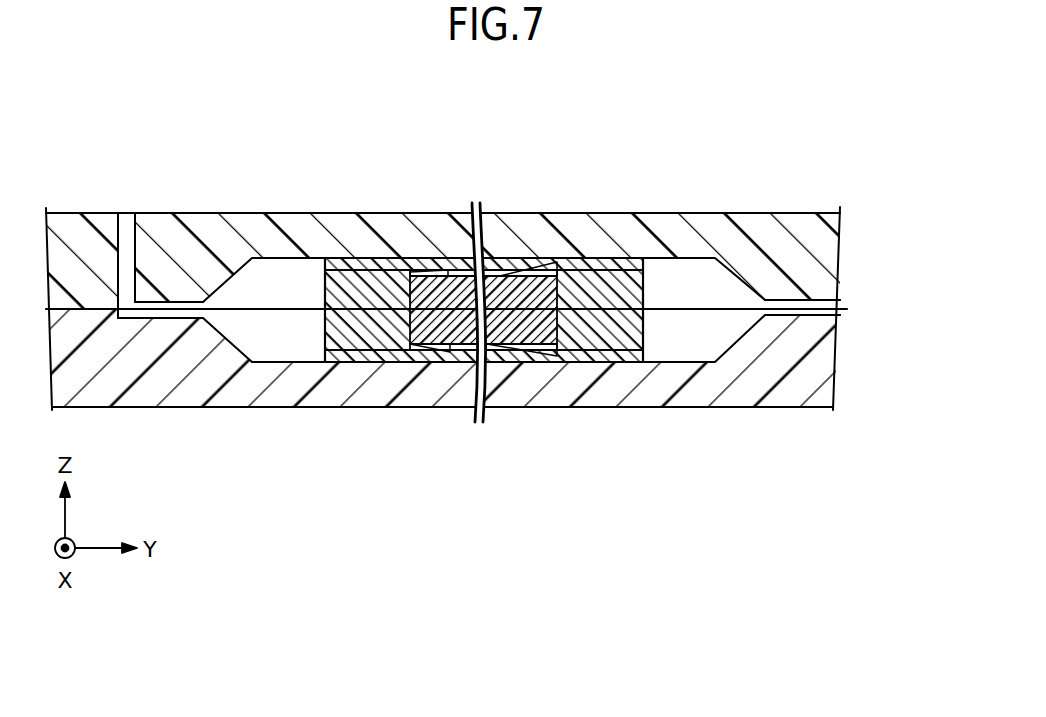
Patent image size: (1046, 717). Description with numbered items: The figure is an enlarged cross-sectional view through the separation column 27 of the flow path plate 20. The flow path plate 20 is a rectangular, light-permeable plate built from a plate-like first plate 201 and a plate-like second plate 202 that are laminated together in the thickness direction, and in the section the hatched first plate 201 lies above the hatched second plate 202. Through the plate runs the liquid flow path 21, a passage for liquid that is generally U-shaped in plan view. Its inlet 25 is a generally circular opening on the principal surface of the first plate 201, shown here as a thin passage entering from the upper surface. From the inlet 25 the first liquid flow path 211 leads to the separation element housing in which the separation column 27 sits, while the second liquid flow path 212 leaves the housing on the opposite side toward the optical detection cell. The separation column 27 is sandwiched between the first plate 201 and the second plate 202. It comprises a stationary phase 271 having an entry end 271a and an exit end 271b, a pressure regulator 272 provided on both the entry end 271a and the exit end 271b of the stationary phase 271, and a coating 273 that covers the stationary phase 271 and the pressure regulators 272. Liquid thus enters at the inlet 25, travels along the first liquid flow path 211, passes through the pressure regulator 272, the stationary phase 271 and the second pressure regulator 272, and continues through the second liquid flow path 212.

The flow path plate 20 is at (504, 308).
The first plate 201 is at (818, 258).
The second plate 202 is at (479, 358).
The liquid flow path 21 is at (476, 223).
The inlet 25 is at (128, 217).
The first liquid flow path 211 is at (174, 305).
The second liquid flow path 212 is at (793, 305).
The separation column 27 is at (479, 297).
The stationary phase 271 is at (481, 258).
The entry end 271a is at (412, 290).
The exit end 271b is at (560, 290).
The pressure regulator 272 is at (337, 287).
The coating 273 is at (503, 270).